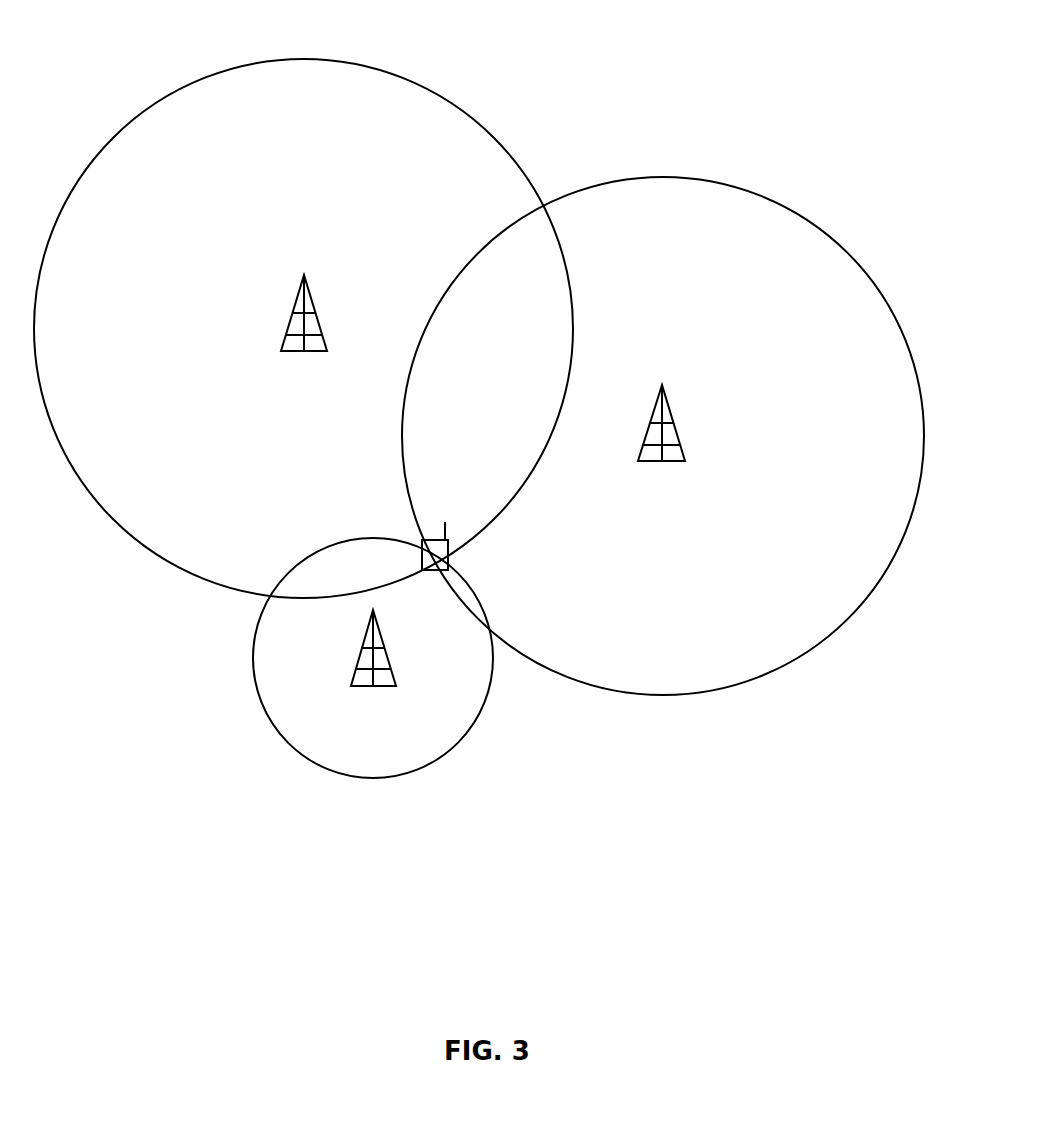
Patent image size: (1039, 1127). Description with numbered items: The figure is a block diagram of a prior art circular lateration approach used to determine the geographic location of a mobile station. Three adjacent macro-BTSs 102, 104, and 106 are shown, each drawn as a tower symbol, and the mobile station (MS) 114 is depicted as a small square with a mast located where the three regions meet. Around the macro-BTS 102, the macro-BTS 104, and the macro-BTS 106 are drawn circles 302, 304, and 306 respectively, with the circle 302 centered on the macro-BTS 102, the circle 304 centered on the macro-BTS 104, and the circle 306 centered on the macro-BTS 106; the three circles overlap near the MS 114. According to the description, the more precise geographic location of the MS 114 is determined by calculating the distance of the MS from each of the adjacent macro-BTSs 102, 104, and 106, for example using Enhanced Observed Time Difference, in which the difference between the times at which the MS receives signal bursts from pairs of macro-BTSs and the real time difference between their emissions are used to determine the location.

The macro-BTS 102 is at (292, 313).
The macro-BTS 104 is at (674, 422).
The macro-BTS 106 is at (373, 688).
The mobile station 114 is at (448, 553).
The first coverage area 302 is at (392, 71).
The second coverage area 304 is at (788, 208).
The third coverage area 306 is at (402, 776).